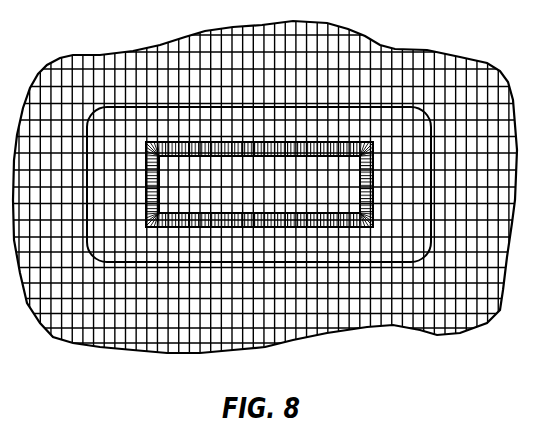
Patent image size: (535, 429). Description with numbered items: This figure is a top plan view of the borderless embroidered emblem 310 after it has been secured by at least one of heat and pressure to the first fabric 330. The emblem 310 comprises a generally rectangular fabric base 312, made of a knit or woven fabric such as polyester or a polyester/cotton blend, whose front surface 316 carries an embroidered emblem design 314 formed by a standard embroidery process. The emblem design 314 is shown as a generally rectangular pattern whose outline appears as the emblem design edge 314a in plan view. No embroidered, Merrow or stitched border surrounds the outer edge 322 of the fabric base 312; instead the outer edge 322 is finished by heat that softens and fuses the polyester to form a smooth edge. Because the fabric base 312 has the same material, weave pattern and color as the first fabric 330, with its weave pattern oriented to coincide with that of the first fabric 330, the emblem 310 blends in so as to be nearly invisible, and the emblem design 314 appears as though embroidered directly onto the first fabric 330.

The first fabric 330 is at (115, 75).
The outer edge 322 is at (280, 262).
The fabric base 312 is at (268, 117).
The embroidered emblem 310 is at (145, 268).
The front surface 316 is at (300, 117).
The emblem design edge 314a is at (363, 140).
The emblem design 314 is at (266, 228).